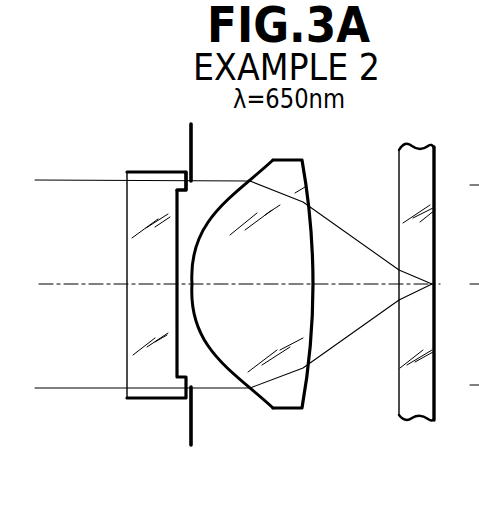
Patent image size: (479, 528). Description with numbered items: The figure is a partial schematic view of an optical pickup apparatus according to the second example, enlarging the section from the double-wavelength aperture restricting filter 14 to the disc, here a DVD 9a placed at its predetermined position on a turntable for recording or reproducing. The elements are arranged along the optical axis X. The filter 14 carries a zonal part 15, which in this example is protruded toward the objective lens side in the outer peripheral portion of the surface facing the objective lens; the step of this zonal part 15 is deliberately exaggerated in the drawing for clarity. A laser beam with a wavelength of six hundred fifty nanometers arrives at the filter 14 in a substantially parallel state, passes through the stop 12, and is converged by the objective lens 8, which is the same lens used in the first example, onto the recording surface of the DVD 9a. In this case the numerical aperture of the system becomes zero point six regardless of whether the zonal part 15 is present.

The objective lens 8 is at (289, 407).
The DVD 9a is at (403, 407).
The stop 12 is at (194, 425).
The double-wavelength aperture restricting filter 14 is at (150, 393).
The zonal part 15 is at (186, 188).
The optical axis X is at (89, 288).